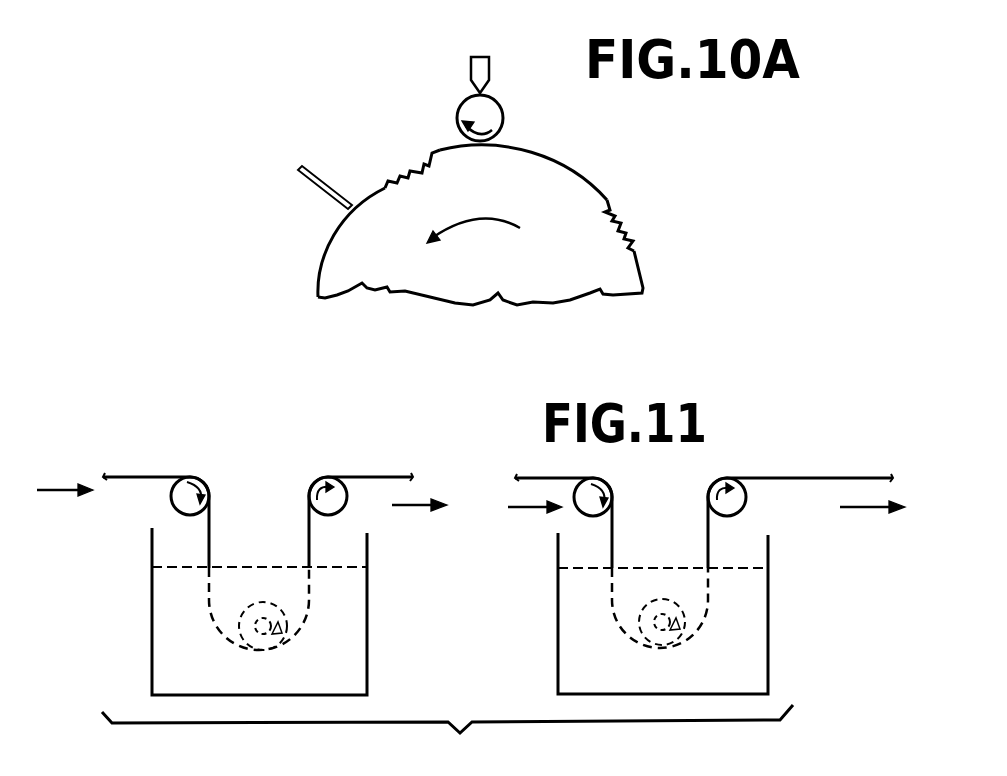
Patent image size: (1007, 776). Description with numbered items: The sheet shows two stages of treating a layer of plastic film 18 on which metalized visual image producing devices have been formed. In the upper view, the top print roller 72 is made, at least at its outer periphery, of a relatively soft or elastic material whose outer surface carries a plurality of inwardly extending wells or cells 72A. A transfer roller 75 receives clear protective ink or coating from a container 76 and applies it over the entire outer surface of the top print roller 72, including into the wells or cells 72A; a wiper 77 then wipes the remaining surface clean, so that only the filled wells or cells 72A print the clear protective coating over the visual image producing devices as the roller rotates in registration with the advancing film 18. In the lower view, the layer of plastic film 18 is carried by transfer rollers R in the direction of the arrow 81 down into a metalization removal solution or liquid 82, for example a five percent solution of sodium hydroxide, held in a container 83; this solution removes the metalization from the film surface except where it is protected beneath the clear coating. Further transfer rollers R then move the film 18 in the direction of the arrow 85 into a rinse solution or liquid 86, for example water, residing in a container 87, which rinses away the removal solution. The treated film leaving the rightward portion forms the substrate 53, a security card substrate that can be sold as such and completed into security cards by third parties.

In FIG. 10A, the top print roller 72 is at (582, 172).
In FIG. 10A, the wells or cells 72A is at (397, 172).
In FIG. 10A, the transfer roller 75 is at (503, 114).
In FIG. 10A, the container of clear protective ink or coating 76 is at (488, 74).
In FIG. 10A, the wiper 77 is at (318, 172).
In FIG. 11, the layer of plastic film 18 is at (165, 474).
In FIG. 11, the transfer rollers R is at (177, 503).
In FIG. 11, the web feed direction 81 is at (60, 488).
In FIG. 11, the metalization removal solution or liquid 82 is at (341, 656).
In FIG. 11, the container 83 is at (367, 606).
In FIG. 11, the arrow 85 is at (525, 510).
In FIG. 11, the rinse solution or liquid 86 is at (749, 662).
In FIG. 11, the container 87 is at (768, 606).
In FIG. 11, the substrate 53 is at (869, 476).